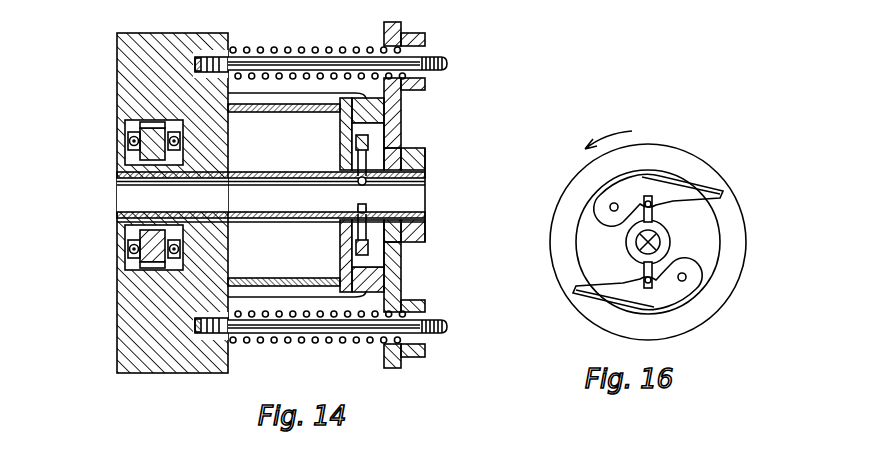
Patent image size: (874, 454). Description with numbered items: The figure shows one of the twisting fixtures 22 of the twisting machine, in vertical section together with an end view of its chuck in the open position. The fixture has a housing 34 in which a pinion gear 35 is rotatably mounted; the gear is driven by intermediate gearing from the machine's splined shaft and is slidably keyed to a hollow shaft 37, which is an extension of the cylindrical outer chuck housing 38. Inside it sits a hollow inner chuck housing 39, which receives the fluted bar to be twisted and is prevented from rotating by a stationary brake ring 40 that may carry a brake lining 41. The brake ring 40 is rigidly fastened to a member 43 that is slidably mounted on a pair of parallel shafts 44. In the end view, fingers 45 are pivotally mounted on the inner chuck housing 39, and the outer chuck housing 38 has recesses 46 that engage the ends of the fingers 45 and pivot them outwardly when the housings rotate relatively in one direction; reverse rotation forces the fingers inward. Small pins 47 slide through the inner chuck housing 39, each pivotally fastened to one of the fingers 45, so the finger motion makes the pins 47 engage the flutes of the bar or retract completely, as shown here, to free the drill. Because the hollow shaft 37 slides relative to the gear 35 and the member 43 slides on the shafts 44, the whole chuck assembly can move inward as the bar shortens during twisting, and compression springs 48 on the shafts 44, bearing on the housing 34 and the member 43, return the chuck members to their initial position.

In FIG. 14, the twisting fixture 22 is at (427, 373).
In FIG. 14, the housing 34 is at (152, 372).
In FIG. 14, the pinion gear 35 is at (142, 272).
In FIG. 14, the hollow shaft 37 is at (258, 178).
In FIG. 14, the outer chuck housing 38 is at (340, 134).
In FIG. 16, the outer chuck housing 38 is at (558, 262).
In FIG. 14, the inner chuck housing 39 is at (368, 185).
In FIG. 16, the inner chuck housing 39 is at (626, 241).
In FIG. 14, the brake ring 40 is at (410, 150).
In FIG. 14, the brake lining 41 is at (428, 160).
In FIG. 16, the brake lining 41 is at (662, 240).
In FIG. 14, the member 43 is at (400, 115).
In FIG. 14, the parallel shafts 44 is at (349, 58).
In FIG. 16, the fingers 45 is at (660, 186).
In FIG. 16, the recesses 46 is at (722, 190).
In FIG. 14, the pins 47 is at (372, 208).
In FIG. 16, the pins 47 is at (640, 272).
In FIG. 14, the compression springs 48 is at (272, 47).